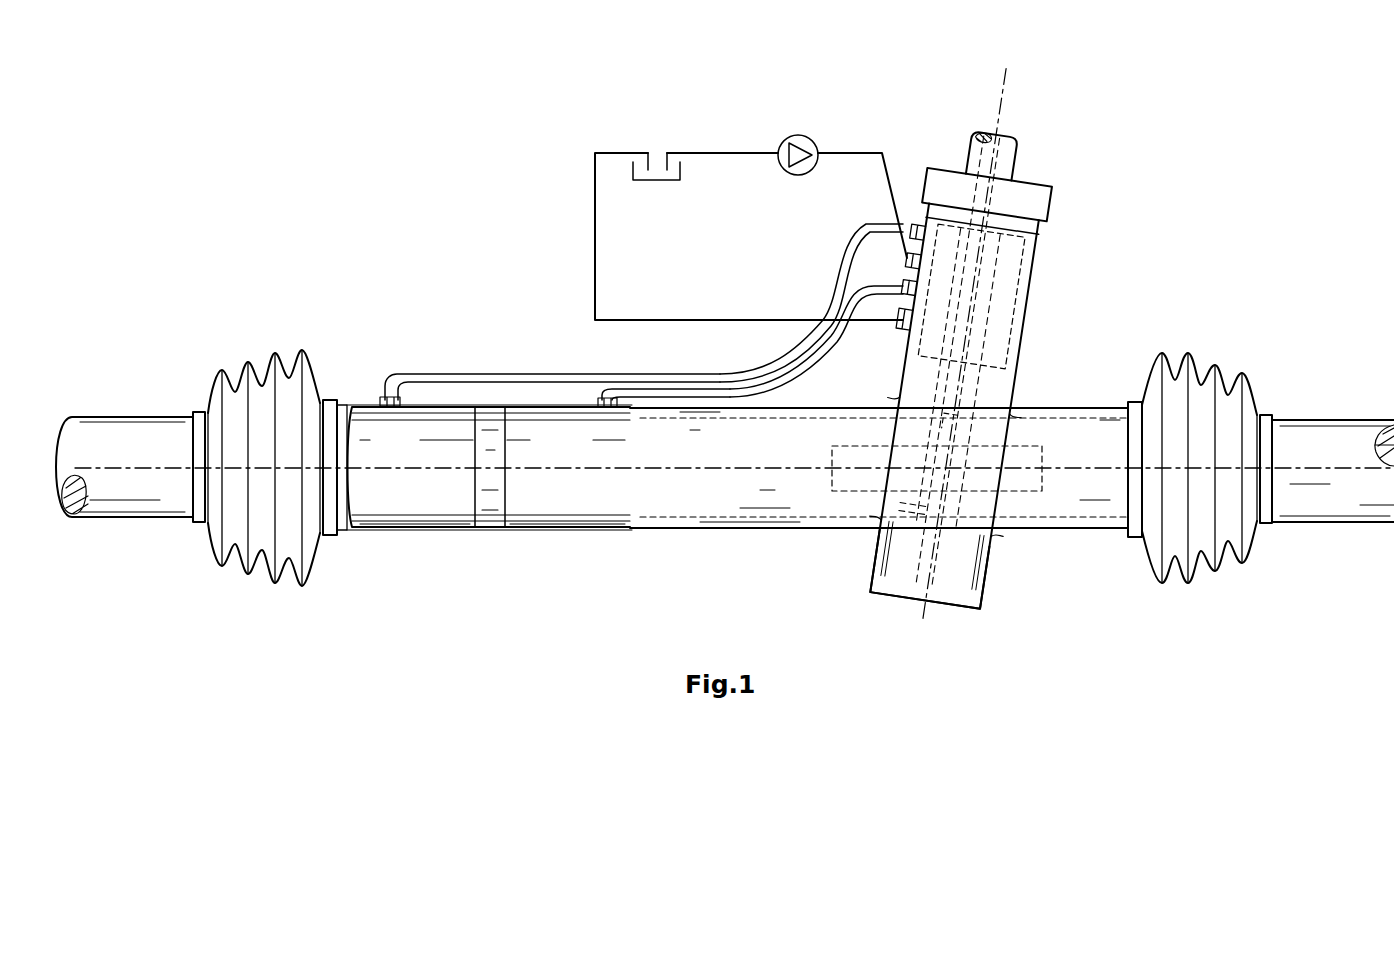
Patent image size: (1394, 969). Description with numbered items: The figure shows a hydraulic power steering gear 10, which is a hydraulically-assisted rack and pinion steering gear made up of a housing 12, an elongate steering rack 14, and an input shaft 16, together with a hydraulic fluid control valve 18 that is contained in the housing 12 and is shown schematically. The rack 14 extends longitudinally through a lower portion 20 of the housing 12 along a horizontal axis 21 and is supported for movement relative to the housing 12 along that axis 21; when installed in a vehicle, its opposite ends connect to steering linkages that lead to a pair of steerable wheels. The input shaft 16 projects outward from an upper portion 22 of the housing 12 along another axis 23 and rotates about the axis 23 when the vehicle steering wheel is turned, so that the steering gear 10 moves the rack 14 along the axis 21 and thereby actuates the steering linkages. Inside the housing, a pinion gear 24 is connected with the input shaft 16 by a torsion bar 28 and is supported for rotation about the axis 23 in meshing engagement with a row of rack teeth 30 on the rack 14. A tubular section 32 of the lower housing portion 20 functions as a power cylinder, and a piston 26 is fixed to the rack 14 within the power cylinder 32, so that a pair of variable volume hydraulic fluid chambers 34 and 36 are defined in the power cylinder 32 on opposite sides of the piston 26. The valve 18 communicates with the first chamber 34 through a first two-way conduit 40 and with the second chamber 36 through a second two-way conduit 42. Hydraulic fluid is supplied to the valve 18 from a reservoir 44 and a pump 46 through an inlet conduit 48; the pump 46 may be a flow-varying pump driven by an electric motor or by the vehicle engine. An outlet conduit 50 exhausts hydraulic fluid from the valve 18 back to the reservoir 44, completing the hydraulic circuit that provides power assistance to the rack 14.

The hydraulic power steering gear 10 is at (450, 230).
The housing 12 is at (750, 530).
The elongate steering rack 14 is at (443, 407).
The input shaft 16 is at (984, 128).
The hydraulic fluid control valve 18 is at (1033, 280).
The lower portion of the housing 20 is at (672, 530).
The horizontal axis 21 is at (688, 468).
The upper portion of the housing 22 is at (1020, 392).
The axis 23 is at (1013, 96).
The pinion gear 24 is at (952, 502).
The piston 26 is at (492, 495).
The torsion bar 28 is at (977, 313).
The rack teeth 30 is at (865, 480).
The tubular section 32 is at (548, 530).
The first variable volume hydraulic fluid chamber 34 is at (410, 459).
The second variable volume hydraulic fluid chamber 36 is at (576, 459).
The first two-way conduit 40 is at (563, 374).
The second two-way conduit 42 is at (808, 370).
The reservoir 44 is at (657, 183).
The pump 46 is at (791, 135).
The inlet conduit 48 is at (851, 152).
The outlet conduit 50 is at (698, 318).